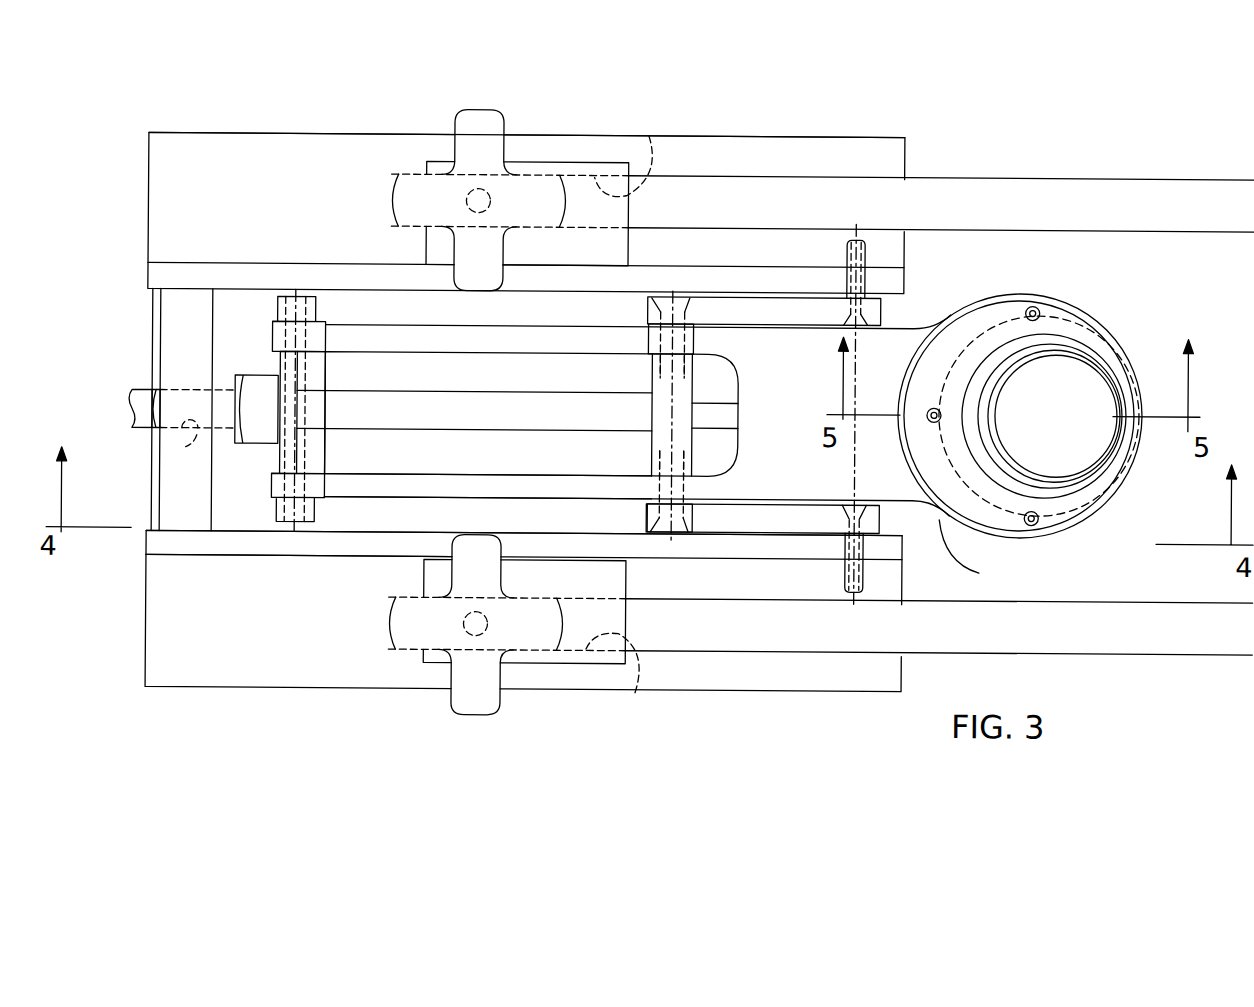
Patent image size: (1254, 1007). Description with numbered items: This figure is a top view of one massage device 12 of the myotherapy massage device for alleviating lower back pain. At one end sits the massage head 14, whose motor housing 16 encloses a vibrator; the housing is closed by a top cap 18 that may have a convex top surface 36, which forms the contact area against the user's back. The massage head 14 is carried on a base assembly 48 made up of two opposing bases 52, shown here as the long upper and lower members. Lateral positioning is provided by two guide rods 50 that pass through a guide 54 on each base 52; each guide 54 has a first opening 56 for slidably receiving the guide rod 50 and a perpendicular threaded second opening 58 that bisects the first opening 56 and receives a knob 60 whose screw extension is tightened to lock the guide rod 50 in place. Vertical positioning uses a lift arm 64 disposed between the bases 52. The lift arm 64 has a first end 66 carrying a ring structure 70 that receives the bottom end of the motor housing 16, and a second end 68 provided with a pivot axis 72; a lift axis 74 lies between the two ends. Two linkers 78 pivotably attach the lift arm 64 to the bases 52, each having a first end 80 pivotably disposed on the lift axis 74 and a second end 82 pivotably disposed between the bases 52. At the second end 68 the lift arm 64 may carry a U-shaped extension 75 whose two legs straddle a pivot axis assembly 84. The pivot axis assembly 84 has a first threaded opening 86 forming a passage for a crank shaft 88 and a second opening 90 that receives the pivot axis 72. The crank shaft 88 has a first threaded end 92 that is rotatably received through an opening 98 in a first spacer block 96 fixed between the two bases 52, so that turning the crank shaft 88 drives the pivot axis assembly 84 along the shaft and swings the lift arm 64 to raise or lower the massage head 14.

The massage device 12 is at (950, 72).
The massage head 14 is at (1068, 280).
The motor housing 16 is at (988, 340).
The top cap 18 is at (1058, 358).
The convex top surface 36 is at (1088, 392).
The base assembly 48 is at (313, 96).
The guide rod 50 is at (727, 203).
The base 52 is at (240, 160).
The guide 54 is at (575, 162).
The first opening 56 is at (623, 415).
The threaded second opening 58 is at (460, 205).
The knob 60 is at (470, 128).
The lift arm 64 is at (595, 330).
The first end 66 is at (893, 478).
The second end 68 is at (365, 492).
The ring structure 70 is at (977, 556).
The pivot axis 72 is at (298, 404).
The lift axis 74 is at (667, 403).
The U-shaped extension 75 is at (458, 488).
The linker 78 is at (770, 312).
The first end of linker 80 is at (647, 310).
The second end of linker 82 is at (910, 275).
The pivot axis assembly 84 is at (245, 352).
The first threaded opening 86 is at (320, 432).
The crank shaft 88 is at (145, 390).
The second opening 90 is at (306, 338).
The first threaded end 92 is at (143, 431).
The first spacer block 96 is at (178, 325).
The opening 98 is at (185, 449).